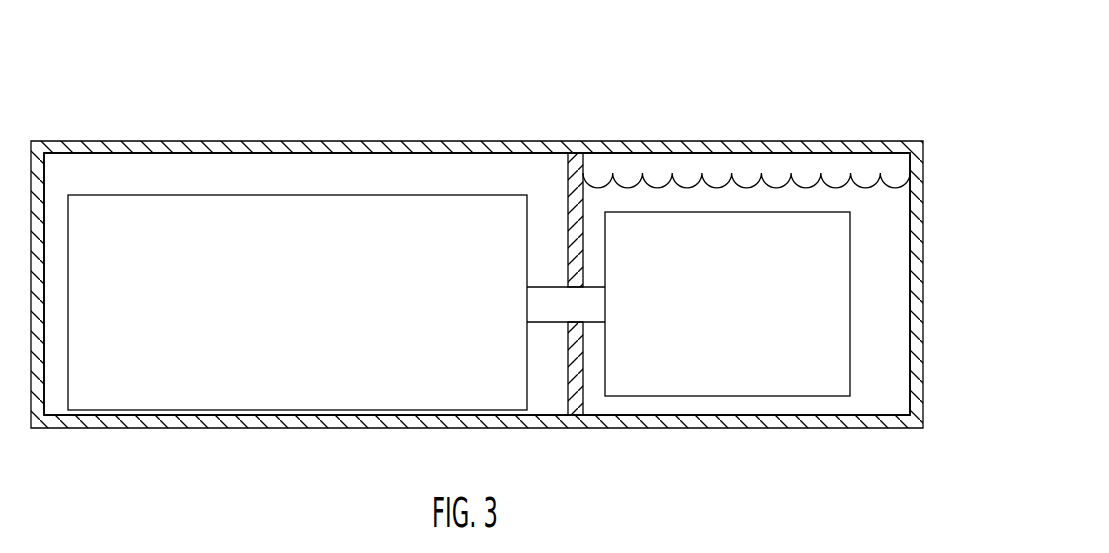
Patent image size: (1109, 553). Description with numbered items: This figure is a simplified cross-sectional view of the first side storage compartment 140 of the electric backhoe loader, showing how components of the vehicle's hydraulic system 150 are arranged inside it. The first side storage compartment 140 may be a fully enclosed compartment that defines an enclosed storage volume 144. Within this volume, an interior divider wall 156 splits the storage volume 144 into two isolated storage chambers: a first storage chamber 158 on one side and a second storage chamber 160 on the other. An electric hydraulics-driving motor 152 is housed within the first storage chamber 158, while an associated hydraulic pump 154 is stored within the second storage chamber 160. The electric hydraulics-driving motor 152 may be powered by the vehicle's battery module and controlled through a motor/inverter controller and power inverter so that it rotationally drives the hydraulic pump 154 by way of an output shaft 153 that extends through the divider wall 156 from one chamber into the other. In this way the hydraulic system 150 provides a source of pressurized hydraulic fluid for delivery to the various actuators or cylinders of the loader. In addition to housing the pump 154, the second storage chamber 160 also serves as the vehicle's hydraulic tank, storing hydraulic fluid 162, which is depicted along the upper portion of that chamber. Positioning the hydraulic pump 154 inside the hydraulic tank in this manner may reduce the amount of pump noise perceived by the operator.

The first side storage compartment 140 is at (482, 238).
The enclosed storage volume 144 is at (692, 55).
The hydraulic system 150 is at (496, 168).
The electric hydraulics-driving motor 152 is at (303, 315).
The output shaft 153 is at (552, 312).
The hydraulic pump 154 is at (742, 316).
The interior divider wall 156 is at (580, 390).
The first storage chamber 158 is at (303, 188).
The second storage chamber 160 is at (897, 316).
The hydraulic fluid 162 is at (857, 187).